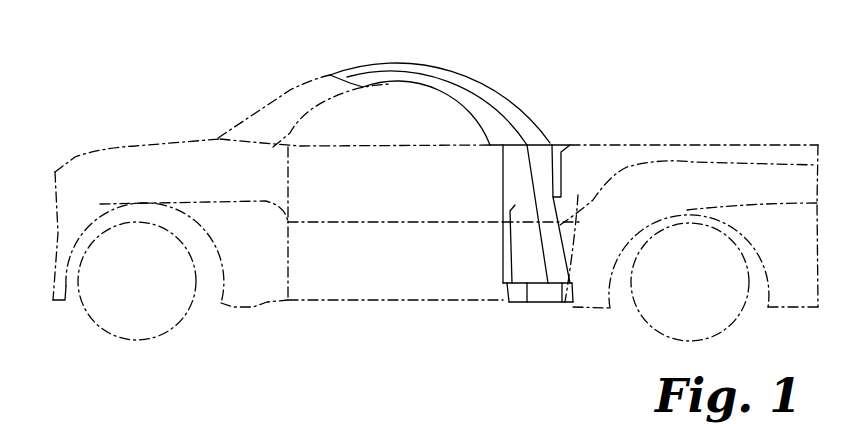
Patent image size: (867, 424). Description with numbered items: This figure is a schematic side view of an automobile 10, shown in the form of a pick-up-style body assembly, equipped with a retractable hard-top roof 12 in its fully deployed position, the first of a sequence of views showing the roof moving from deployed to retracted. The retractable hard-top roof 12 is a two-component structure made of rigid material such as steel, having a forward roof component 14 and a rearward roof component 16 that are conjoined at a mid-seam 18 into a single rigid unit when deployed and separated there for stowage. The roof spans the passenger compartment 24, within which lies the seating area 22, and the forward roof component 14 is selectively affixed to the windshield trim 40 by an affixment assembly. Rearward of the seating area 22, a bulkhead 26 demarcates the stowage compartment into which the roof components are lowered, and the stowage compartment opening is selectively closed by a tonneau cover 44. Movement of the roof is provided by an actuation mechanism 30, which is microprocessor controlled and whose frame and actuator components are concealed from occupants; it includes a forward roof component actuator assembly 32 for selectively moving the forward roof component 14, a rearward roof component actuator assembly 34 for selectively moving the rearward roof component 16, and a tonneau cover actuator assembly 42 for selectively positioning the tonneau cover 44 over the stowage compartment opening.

The automobile 10 is at (435, 201).
The retractable hard-top roof 12 is at (450, 215).
The forward roof component 14 is at (411, 64).
The rearward roof component 16 is at (487, 78).
The mid-seam 18 is at (445, 83).
The seating area 22 is at (323, 138).
The passenger compartment 24 is at (360, 122).
The bulkhead 26 is at (503, 178).
The actuation mechanism 30 is at (527, 305).
The forward roof component actuator assembly 32 is at (503, 288).
The rearward roof component actuator assembly 34 is at (558, 305).
The windshield trim 40 is at (350, 80).
The tonneau cover actuator assembly 42 is at (578, 286).
The tonneau cover 44 is at (560, 154).